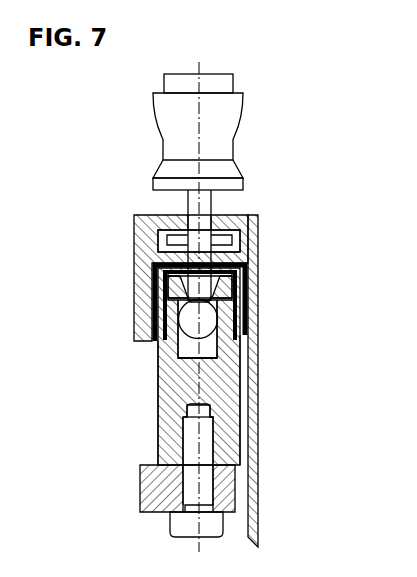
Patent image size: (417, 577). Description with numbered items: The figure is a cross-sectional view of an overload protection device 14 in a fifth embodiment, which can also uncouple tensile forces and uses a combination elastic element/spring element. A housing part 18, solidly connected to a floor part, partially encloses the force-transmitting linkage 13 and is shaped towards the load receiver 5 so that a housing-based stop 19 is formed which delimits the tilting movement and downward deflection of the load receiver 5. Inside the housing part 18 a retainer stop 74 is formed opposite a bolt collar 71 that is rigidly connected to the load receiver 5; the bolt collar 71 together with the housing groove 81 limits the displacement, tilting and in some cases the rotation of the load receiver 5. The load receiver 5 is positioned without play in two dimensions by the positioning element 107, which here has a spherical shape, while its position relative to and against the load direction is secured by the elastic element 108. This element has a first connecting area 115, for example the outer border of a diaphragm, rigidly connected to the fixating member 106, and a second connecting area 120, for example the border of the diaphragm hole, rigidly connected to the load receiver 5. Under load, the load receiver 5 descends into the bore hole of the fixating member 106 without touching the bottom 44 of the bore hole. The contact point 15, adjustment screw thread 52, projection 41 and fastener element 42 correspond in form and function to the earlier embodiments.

The load receiver 5 is at (225, 170).
The bolt collar 71 is at (163, 218).
The housing groove 81 is at (160, 240).
The retainer stop 74 is at (258, 229).
The overload protection device 14 is at (118, 262).
The housing-based stop 19 is at (260, 243).
The housing part 18 is at (153, 278).
The first connecting area 115 is at (233, 278).
The elastic element 108 is at (166, 290).
The second connecting area 120 is at (230, 297).
The contact point 15 is at (172, 320).
The positioning element 107 is at (205, 322).
The adjustment screw thread 52 is at (175, 372).
The bottom of the bore hole 44 is at (203, 348).
The force-transmitting linkage 13 is at (138, 408).
The fixating member 106 is at (213, 402).
The projection 41 is at (150, 494).
The fastener element 42 is at (172, 521).